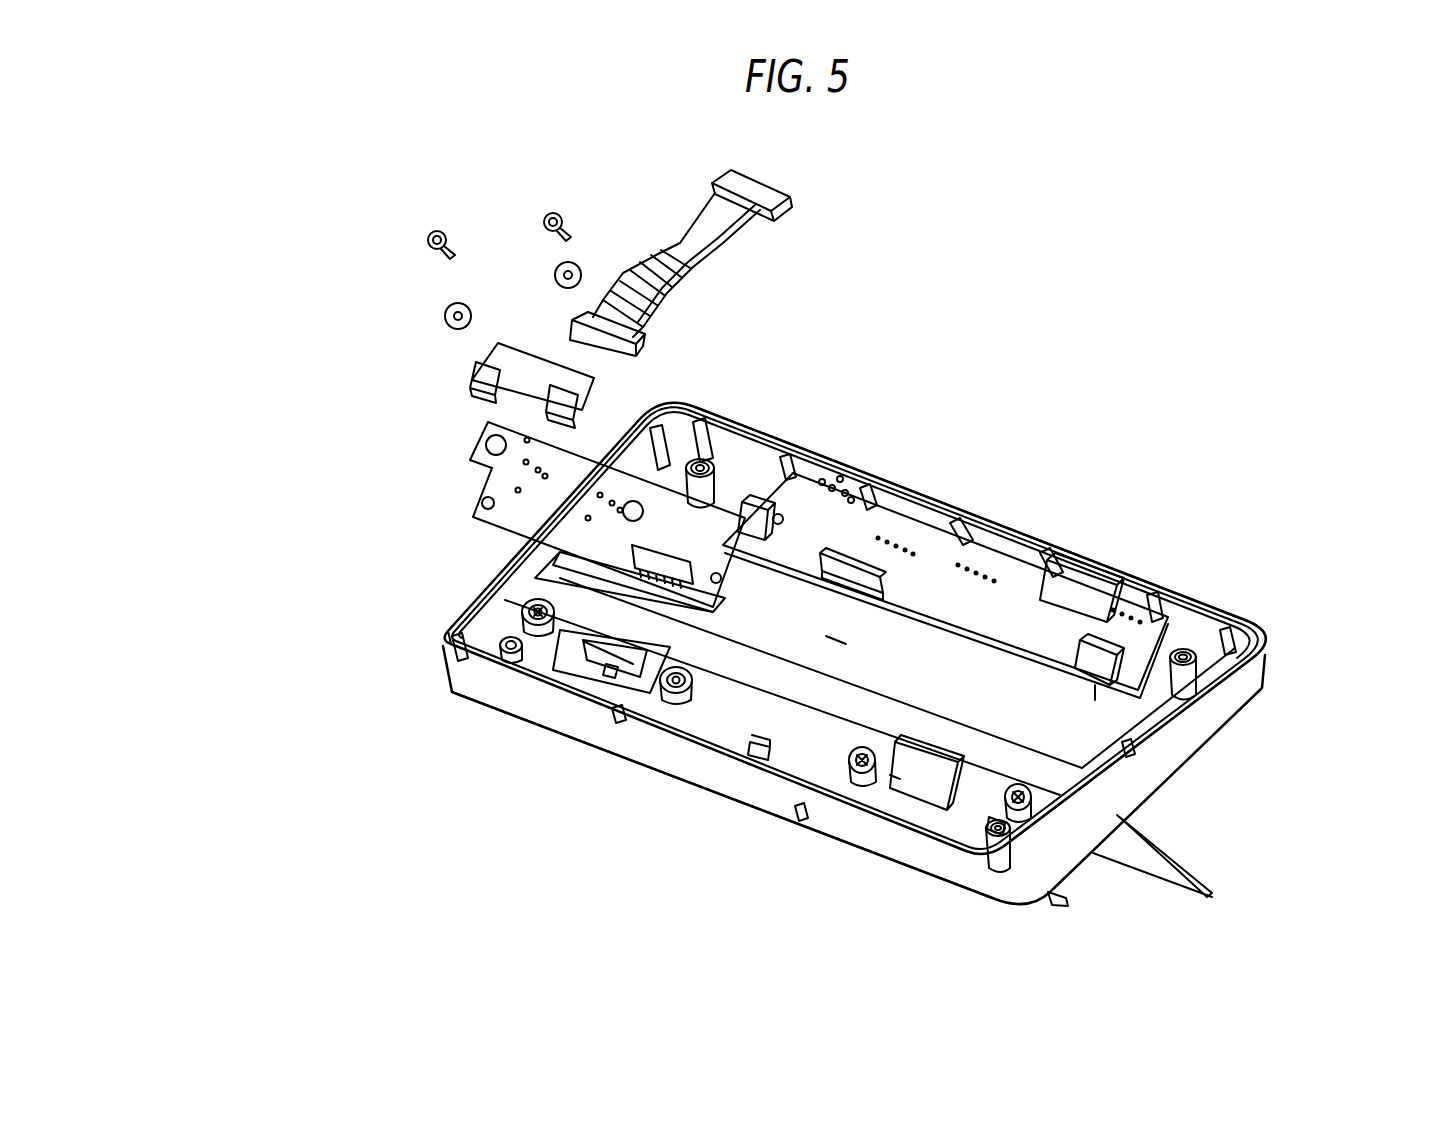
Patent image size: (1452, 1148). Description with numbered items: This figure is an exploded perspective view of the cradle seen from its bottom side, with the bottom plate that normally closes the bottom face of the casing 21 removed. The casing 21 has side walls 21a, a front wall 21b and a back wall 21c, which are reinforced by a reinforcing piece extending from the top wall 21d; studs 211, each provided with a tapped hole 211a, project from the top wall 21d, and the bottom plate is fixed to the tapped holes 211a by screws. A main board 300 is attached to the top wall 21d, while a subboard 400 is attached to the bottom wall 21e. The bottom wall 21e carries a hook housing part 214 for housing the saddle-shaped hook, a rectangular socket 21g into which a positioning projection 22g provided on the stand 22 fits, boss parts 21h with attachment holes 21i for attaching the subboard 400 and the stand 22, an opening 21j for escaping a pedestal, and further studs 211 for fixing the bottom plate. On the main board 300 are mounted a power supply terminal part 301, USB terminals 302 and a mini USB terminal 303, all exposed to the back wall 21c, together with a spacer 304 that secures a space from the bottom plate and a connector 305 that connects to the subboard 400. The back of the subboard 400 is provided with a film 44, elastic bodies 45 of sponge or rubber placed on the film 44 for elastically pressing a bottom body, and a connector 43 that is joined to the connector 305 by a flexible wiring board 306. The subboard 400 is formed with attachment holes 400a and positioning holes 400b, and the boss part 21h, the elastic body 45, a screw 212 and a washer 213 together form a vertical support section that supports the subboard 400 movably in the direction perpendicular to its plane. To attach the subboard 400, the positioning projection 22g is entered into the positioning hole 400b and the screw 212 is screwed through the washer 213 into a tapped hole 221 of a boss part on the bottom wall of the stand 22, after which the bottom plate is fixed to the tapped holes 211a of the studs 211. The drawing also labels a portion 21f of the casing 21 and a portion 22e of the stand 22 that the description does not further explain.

The casing 21 is at (1268, 657).
The side walls 21a is at (1163, 773).
The front wall 21b is at (910, 860).
The back wall 21c is at (890, 483).
The top wall 21d is at (837, 640).
The bottom wall 21e is at (813, 717).
The corner wall 21f is at (1232, 623).
The rectangular socket 21g is at (755, 770).
The boss parts 21h is at (450, 653).
The attachment holes 21i is at (525, 600).
The opening 21j is at (690, 677).
The stand 22 is at (1215, 893).
The stand engagement portion 22e is at (610, 670).
The positioning projection 22g is at (760, 757).
The connector 43 is at (645, 350).
The film 44 is at (510, 350).
The elastic bodies 45 is at (598, 422).
The studs 211 is at (708, 487).
The tapped hole 211a is at (720, 453).
The screw 212 is at (558, 218).
The washer 213 is at (575, 262).
The hook housing part 214 is at (923, 757).
The tapped hole 221 is at (527, 613).
The main board 300 is at (1123, 610).
The power supply terminal part 301 is at (1073, 580).
The USB terminals 302 is at (937, 503).
The mini USB terminal 303 is at (823, 487).
The spacer 304 is at (773, 513).
The connector 305 is at (748, 187).
The flexible wiring board 306 is at (718, 250).
The subboard 400 is at (490, 478).
The attachment holes 400a is at (447, 430).
The positioning holes 400b is at (483, 503).